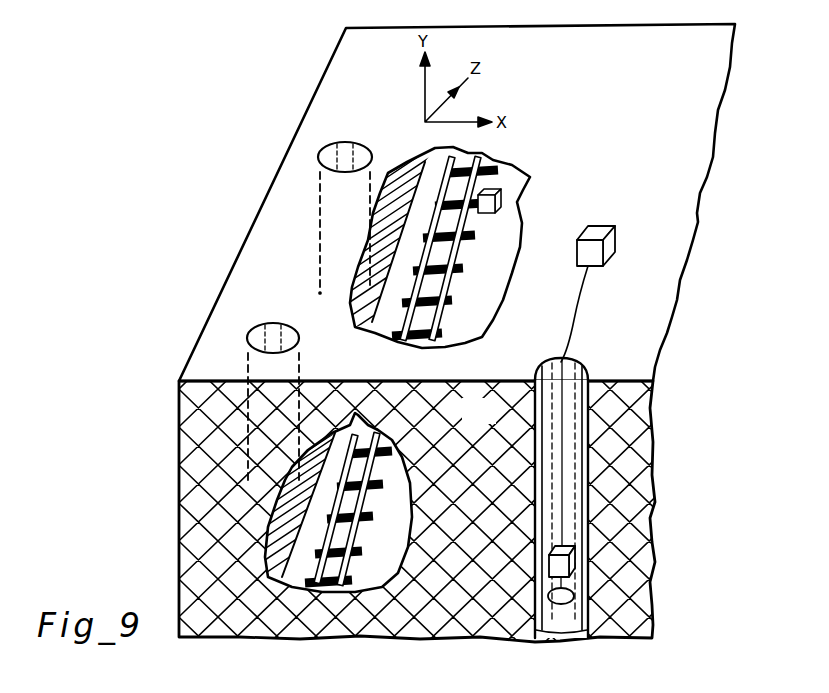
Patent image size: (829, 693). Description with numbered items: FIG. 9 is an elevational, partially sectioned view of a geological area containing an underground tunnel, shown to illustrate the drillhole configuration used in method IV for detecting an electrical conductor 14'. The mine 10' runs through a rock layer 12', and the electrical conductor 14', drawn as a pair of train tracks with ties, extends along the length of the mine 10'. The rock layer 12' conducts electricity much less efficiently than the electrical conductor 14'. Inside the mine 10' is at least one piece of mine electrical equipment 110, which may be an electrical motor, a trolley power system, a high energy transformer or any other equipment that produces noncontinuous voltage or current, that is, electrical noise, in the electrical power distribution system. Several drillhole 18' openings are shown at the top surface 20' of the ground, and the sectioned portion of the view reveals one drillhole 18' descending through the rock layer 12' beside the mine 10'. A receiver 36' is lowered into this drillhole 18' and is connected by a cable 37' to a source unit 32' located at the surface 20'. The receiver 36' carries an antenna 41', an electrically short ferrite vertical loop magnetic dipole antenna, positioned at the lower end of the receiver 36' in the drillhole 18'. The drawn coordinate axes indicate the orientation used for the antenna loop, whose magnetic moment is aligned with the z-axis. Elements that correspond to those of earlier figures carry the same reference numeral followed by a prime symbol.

The earth surface 20' is at (457, 202).
The drillhole 18' is at (415, 378).
The rock layer 12' is at (417, 378).
The electrical conductor 14' is at (401, 357).
The mine electrical equipment 110 is at (500, 190).
The mine 10' is at (397, 369).
The source unit 32' is at (615, 245).
The cable 37' is at (588, 314).
The receiver 36' is at (530, 558).
The antenna 41' is at (560, 620).